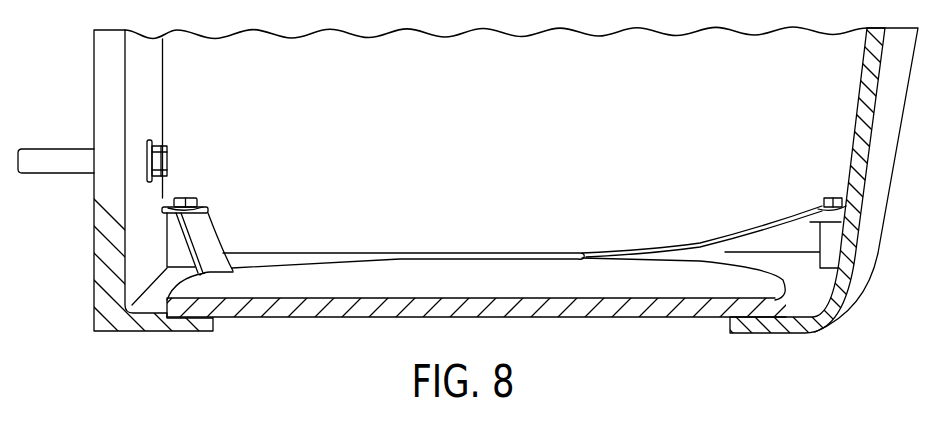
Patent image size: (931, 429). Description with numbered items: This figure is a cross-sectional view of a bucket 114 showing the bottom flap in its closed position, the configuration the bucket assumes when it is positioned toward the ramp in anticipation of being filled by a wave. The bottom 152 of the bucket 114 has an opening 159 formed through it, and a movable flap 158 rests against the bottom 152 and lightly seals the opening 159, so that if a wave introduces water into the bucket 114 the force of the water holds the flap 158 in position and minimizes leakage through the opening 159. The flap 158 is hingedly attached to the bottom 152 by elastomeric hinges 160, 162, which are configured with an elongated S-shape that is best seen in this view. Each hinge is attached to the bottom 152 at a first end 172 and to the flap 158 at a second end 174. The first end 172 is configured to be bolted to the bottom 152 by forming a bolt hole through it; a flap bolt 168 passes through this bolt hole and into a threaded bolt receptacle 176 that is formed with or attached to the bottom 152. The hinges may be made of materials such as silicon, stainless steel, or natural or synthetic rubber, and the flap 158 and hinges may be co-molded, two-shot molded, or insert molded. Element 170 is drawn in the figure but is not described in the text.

The bucket 114 is at (562, 340).
The bottom 152 is at (166, 322).
The flap 158 is at (465, 278).
The opening 159 is at (700, 326).
The elastomeric hinge 160 is at (772, 212).
The elastomeric hinge 162 is at (216, 222).
The flap bolt 168 is at (190, 196).
The bracket web 170 is at (207, 245).
The first end 172 is at (163, 218).
The second end 174 is at (233, 271).
The threaded bolt receptacle 176 is at (172, 246).